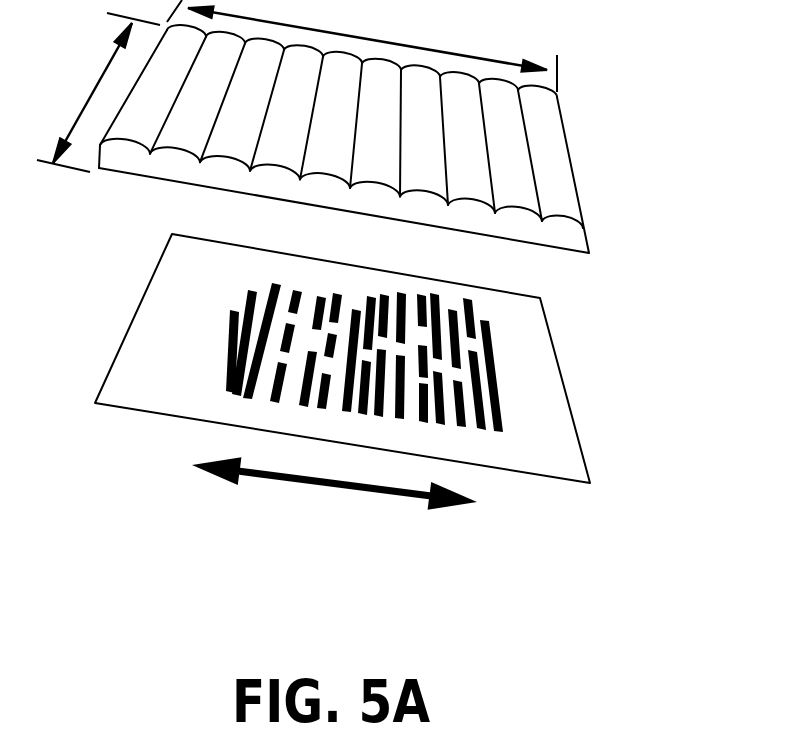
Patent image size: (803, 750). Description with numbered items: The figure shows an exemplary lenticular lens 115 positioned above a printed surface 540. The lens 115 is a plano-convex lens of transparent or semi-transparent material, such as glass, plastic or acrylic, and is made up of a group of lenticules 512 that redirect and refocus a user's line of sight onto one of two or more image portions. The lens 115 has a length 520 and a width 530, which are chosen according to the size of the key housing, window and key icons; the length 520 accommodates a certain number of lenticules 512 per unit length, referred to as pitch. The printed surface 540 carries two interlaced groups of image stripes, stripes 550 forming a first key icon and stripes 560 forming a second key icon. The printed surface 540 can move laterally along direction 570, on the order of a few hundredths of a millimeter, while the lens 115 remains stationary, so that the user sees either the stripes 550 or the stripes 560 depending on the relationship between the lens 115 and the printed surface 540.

The lens 115 is at (562, 120).
The lenticules 512 is at (133, 141).
The length 520 is at (362, 46).
The width 530 is at (98, 92).
The printed surface 540 is at (633, 387).
The stripes 550 is at (289, 376).
The stripes 560 is at (225, 327).
The direction 570 is at (348, 500).